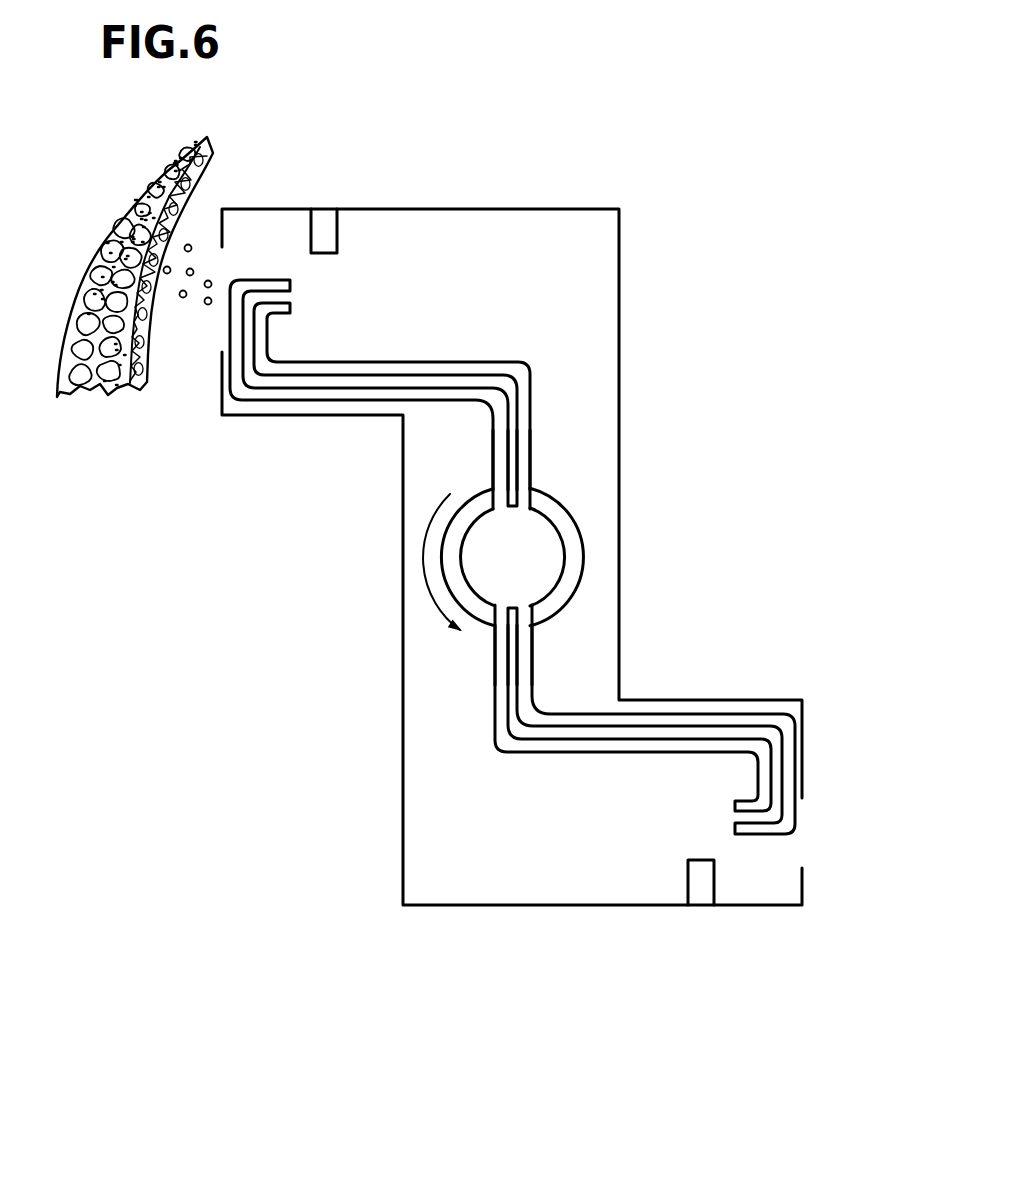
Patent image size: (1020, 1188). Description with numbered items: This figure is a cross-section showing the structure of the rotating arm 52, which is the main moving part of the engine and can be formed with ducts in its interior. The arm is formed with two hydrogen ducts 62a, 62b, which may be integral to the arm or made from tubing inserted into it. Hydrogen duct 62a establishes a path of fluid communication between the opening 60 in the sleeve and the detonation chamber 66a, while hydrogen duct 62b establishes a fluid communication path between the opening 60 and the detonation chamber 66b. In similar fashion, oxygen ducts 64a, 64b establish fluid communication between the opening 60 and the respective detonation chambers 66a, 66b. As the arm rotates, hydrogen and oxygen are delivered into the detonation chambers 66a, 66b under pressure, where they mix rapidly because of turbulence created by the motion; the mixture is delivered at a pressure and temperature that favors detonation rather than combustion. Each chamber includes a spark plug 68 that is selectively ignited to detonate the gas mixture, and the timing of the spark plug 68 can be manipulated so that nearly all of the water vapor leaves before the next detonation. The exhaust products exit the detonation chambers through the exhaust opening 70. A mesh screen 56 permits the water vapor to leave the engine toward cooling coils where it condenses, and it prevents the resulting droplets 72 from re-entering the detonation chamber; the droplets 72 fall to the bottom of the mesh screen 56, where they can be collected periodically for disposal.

The rotating arm 52 is at (390, 584).
The mesh screen 56 is at (102, 222).
The opening 60 is at (533, 560).
The hydrogen duct 62a is at (530, 426).
The hydrogen duct 62b is at (634, 712).
The oxygen duct 64a is at (493, 430).
The oxygen duct 64b is at (493, 718).
The detonation chamber 66a is at (428, 240).
The detonation chamber 66b is at (556, 878).
The spark plug 68 is at (325, 228).
The exhaust opening 70 is at (216, 254).
The droplets 72 is at (183, 297).